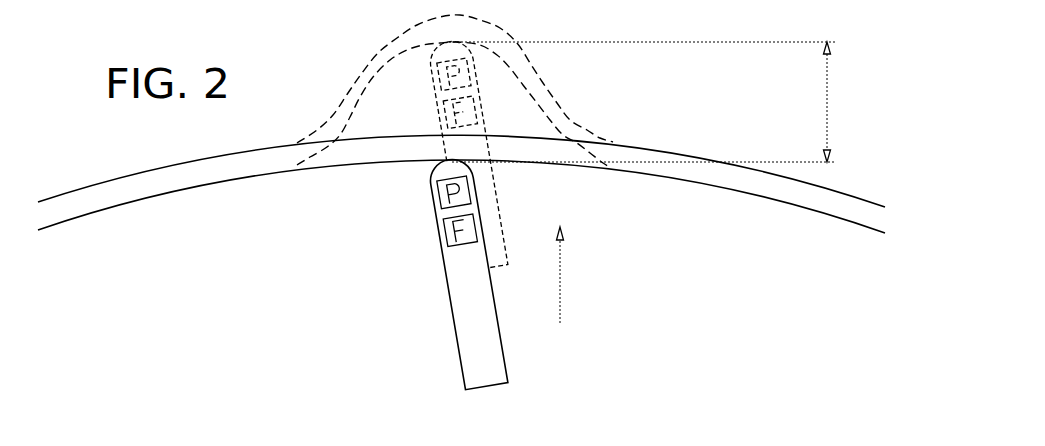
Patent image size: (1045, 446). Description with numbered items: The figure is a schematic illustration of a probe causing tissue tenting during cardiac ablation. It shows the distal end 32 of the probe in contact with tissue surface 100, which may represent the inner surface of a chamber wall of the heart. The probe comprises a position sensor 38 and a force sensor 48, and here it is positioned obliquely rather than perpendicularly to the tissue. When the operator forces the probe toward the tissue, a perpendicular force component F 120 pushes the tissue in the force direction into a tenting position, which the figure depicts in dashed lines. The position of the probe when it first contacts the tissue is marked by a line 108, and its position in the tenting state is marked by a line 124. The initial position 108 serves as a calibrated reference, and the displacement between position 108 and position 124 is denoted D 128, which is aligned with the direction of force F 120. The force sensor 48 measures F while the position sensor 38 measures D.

The tissue surface 100 is at (197, 183).
The line marking initial probe position 108 is at (805, 162).
The line marking tenting position 124 is at (807, 42).
The displacement D 128 is at (827, 126).
The distal end of probe 32 is at (457, 348).
The position sensor 38 is at (439, 190).
The force sensor 48 is at (446, 237).
The perpendicular force component F 120 is at (560, 312).